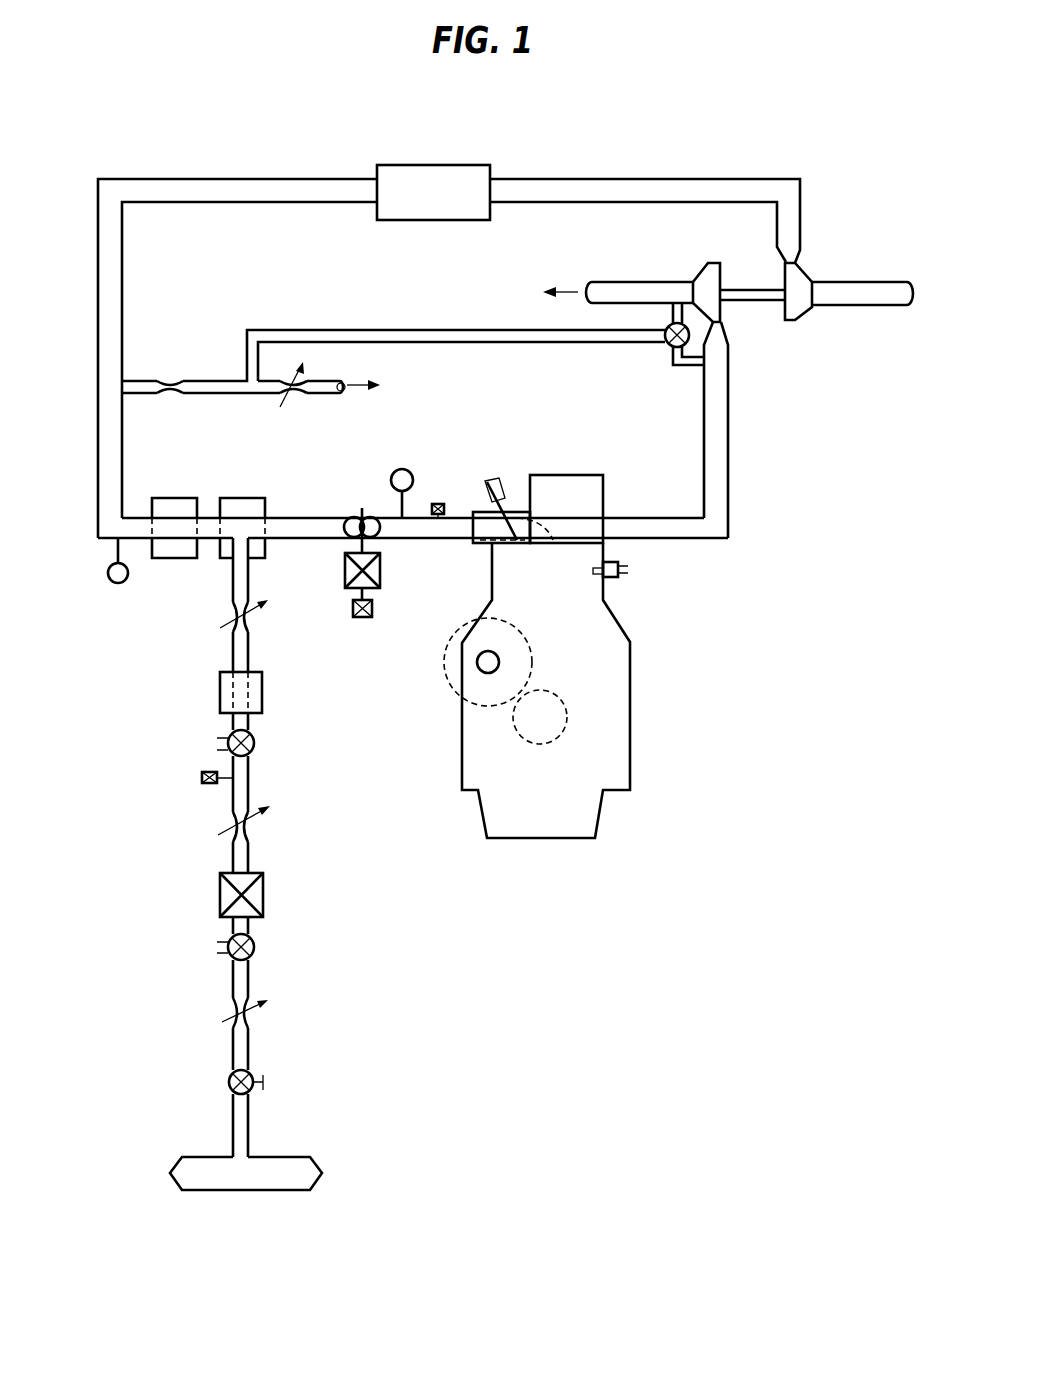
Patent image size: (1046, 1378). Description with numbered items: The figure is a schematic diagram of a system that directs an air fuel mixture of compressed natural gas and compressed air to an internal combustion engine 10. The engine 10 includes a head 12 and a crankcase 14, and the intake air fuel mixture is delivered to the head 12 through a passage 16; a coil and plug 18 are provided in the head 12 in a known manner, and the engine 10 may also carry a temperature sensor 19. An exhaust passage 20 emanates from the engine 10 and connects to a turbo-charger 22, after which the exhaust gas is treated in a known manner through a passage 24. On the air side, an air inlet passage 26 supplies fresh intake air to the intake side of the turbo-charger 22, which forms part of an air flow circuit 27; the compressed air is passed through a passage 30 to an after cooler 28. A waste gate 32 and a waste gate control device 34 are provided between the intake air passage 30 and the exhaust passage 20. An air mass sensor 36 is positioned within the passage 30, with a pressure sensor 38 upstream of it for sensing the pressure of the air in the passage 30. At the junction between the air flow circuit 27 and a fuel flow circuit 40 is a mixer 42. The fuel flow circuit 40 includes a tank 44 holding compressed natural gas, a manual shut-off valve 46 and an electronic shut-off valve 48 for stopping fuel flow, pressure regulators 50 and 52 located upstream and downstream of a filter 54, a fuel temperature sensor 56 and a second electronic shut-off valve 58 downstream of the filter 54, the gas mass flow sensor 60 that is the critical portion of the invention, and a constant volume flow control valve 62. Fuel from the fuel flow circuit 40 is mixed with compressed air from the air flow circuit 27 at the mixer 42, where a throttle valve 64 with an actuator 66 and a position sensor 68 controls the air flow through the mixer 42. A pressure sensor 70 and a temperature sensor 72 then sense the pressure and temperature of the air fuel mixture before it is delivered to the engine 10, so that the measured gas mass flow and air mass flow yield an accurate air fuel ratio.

The internal combustion engine 10 is at (645, 695).
The head 12 is at (525, 512).
The crankcase 14 is at (465, 700).
The passage 16 is at (464, 512).
The coil and plug 18 is at (496, 480).
The temperature sensor 19 is at (614, 580).
The exhaust passage 20 is at (672, 540).
The turbo-charger 22 is at (750, 322).
The passage 24 is at (625, 282).
The air inlet passage 26 is at (872, 280).
The air flow circuit 27 is at (818, 225).
The after cooler 28 is at (440, 165).
The passage 30 is at (632, 179).
The waste gate 32 is at (668, 348).
The waste gate control device 34 is at (212, 393).
The air mass sensor 36 is at (172, 498).
The pressure sensor 38 is at (113, 583).
The fuel flow circuit 40 is at (203, 972).
The mixer 42 is at (245, 498).
The tank 44 is at (270, 1157).
The manual shut-off valve 46 is at (255, 1070).
The electronic shut-off valve 48 is at (255, 947).
The pressure regulator 50 is at (258, 1013).
The pressure regulator 52 is at (257, 831).
The filter 54 is at (266, 895).
The fuel temperature sensor 56 is at (200, 777).
The second electronic shut-off valve 58 is at (255, 743).
The gas mass flow sensor 60 is at (265, 698).
The constant volume flow control valve 62 is at (255, 627).
The throttle valve 64 is at (375, 518).
The actuator 66 is at (382, 570).
The position sensor 68 is at (374, 608).
The pressure sensor 70 is at (398, 470).
The temperature sensor 72 is at (437, 500).